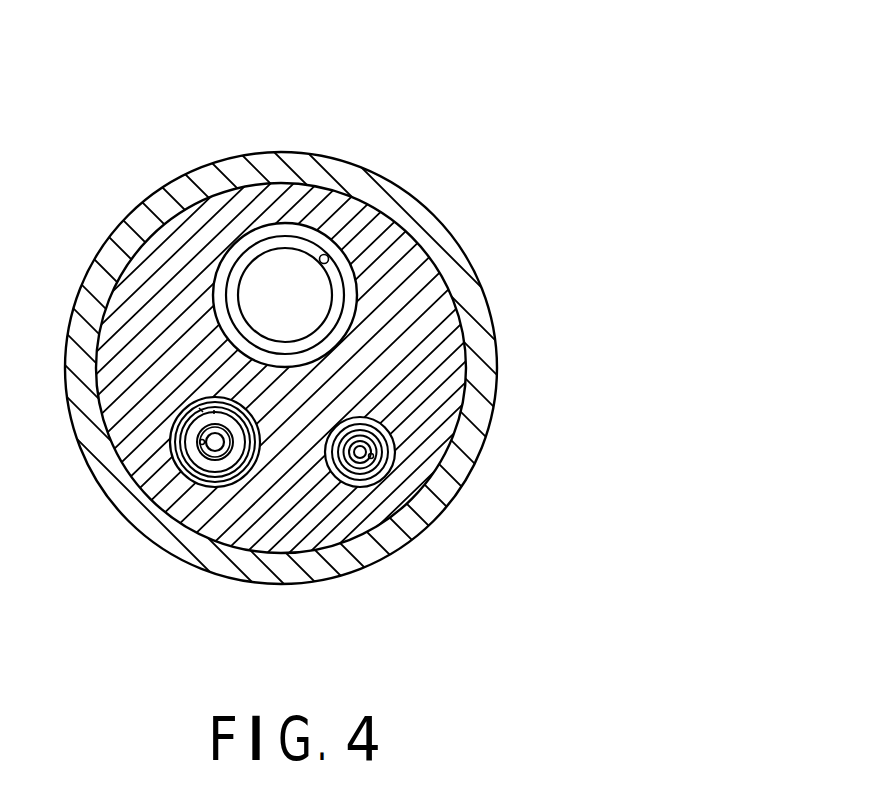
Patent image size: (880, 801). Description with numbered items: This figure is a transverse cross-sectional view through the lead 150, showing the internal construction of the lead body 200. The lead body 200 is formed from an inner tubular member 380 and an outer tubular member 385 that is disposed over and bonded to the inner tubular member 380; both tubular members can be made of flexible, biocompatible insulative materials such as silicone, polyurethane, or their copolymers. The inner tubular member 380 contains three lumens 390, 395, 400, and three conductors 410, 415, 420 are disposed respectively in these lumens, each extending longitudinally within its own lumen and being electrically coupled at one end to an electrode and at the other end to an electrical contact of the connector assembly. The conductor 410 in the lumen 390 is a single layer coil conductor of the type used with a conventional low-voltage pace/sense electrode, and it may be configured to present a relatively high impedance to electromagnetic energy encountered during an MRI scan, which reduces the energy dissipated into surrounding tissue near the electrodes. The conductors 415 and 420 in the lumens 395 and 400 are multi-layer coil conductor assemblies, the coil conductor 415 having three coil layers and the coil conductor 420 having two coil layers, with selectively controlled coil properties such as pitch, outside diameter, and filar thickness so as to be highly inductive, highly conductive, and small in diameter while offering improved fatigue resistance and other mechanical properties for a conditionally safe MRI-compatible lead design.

The lead 150 is at (410, 136).
The lead body 200 is at (475, 261).
The inner tubular member 380 is at (455, 382).
The outer tubular member 385 is at (77, 295).
The lumen 390 is at (343, 327).
The lumen 395 is at (338, 487).
The lumen 400 is at (221, 489).
The coil conductor 410 is at (262, 226).
The coil conductor 415 is at (387, 460).
The coil conductor 420 is at (169, 450).